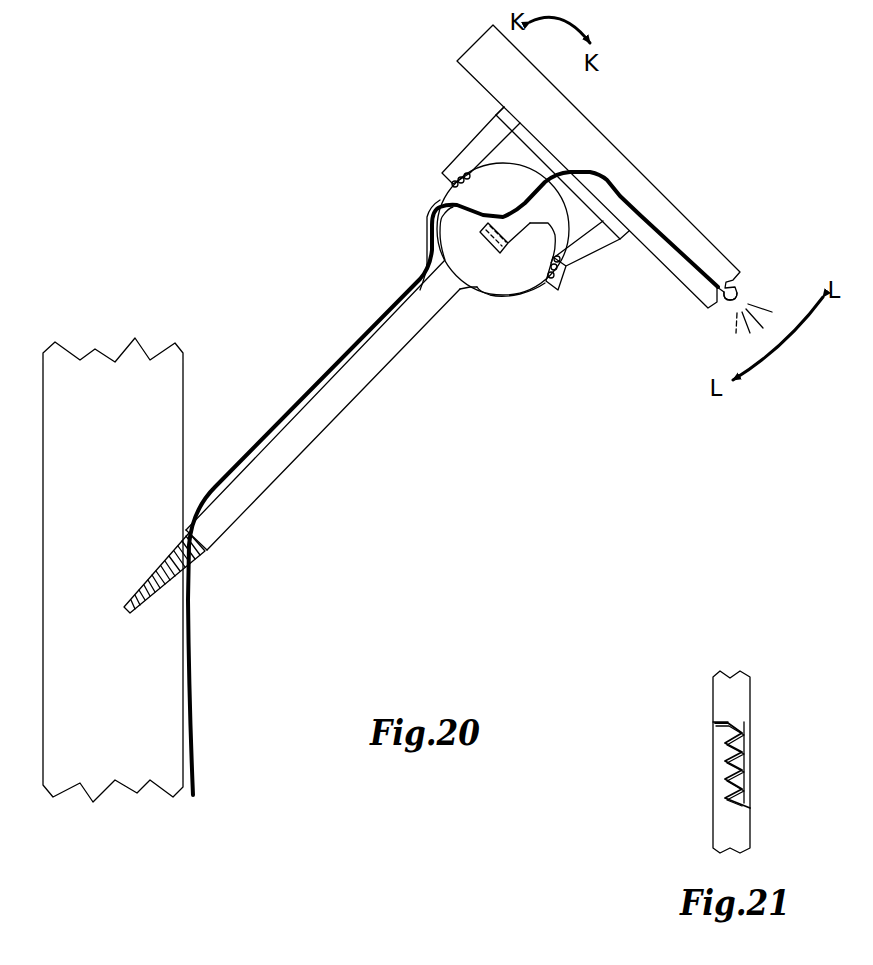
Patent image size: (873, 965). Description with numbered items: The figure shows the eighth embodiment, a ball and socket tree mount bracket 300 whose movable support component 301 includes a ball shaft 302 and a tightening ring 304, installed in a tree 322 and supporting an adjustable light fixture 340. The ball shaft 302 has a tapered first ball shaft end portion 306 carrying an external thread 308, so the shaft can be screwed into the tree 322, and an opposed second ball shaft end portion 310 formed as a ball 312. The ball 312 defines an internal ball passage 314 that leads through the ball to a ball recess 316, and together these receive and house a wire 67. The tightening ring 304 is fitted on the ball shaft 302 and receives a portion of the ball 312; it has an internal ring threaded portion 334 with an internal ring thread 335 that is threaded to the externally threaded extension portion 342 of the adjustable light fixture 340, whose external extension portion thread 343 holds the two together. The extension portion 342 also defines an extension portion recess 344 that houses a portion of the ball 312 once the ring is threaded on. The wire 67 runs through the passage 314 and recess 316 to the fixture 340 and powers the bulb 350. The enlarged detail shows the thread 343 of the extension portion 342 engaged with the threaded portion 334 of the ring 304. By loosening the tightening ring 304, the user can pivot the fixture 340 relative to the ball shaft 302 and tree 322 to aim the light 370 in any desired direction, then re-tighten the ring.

In FIG. 20, the wire 67 is at (198, 668).
In FIG. 20, the ball and socket tree mount bracket 300 is at (509, 312).
In FIG. 20, the movable support component 301 is at (522, 293).
In FIG. 20, the ball shaft 302 is at (283, 463).
In FIG. 20, the tightening ring 304 is at (447, 173).
In FIG. 21, the tightening ring 304 is at (720, 820).
In FIG. 20, the first ball shaft end portion 306 is at (220, 523).
In FIG. 20, the external thread 308 is at (163, 560).
In FIG. 20, the second ball shaft end portion 310 is at (410, 252).
In FIG. 20, the ball 312 is at (489, 268).
In FIG. 20, the internal ball passage 314 is at (447, 212).
In FIG. 20, the ball recess 316 is at (467, 137).
In FIG. 20, the tree 322 is at (128, 368).
In FIG. 20, the internal ring threaded portion 334 is at (550, 288).
In FIG. 21, the internal ring threaded portion 334 is at (718, 739).
In FIG. 20, the internal ring thread 335 is at (564, 262).
In FIG. 21, the internal ring thread 335 is at (730, 775).
In FIG. 20, the adjustable light fixture 340 is at (587, 137).
In FIG. 21, the adjustable light fixture 340 is at (737, 696).
In FIG. 20, the externally threaded extension portion 342 is at (566, 278).
In FIG. 21, the externally threaded extension portion 342 is at (743, 753).
In FIG. 20, the external extension portion thread 343 is at (453, 192).
In FIG. 21, the external extension portion thread 343 is at (740, 784).
In FIG. 20, the extension portion recess 344 is at (497, 117).
In FIG. 20, the bulb 350 is at (743, 280).
In FIG. 20, the light 370 is at (770, 310).